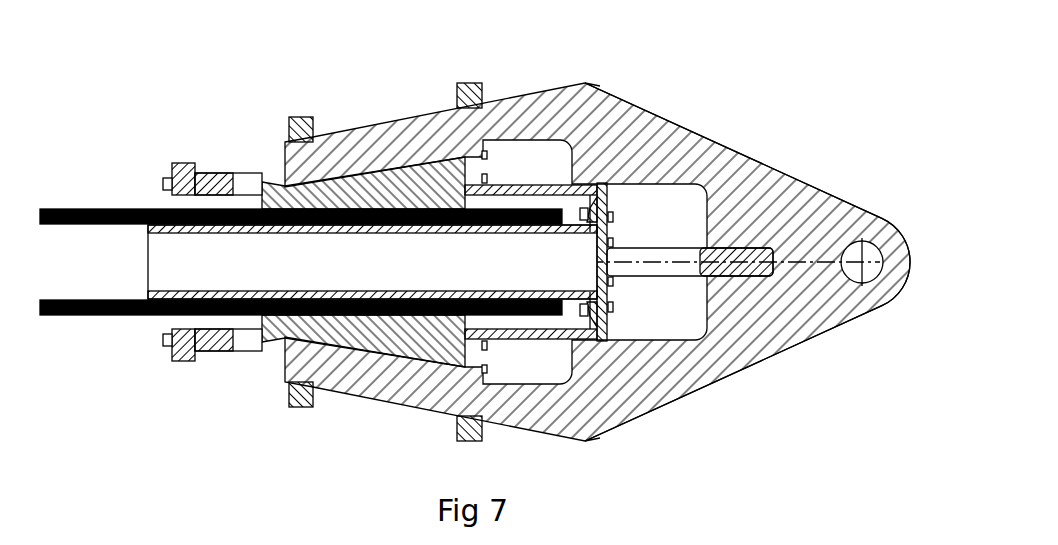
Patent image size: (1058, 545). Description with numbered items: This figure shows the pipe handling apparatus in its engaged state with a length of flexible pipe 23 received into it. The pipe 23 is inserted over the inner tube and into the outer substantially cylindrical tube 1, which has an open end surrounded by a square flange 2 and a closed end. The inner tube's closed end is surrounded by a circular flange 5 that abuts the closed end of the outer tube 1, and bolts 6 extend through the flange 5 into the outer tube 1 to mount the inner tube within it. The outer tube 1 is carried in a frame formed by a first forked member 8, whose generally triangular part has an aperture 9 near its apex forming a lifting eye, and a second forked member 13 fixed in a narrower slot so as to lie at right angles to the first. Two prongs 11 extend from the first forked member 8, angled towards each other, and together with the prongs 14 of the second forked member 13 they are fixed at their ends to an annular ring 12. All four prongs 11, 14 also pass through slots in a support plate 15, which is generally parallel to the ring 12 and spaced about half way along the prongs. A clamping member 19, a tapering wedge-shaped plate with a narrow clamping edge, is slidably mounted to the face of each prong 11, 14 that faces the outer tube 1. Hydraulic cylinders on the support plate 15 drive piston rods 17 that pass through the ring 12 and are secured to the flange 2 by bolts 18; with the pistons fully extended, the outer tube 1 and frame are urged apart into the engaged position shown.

The outer substantially cylindrical tube 1 is at (521, 337).
The square flange 2 is at (172, 165).
The circular flange 5 is at (598, 187).
The bolts 6 is at (610, 208).
The first forked member 8 is at (802, 330).
The aperture 9 is at (862, 265).
The prongs 11 is at (421, 122).
The annular ring 12 is at (297, 407).
The second forked member 13 is at (663, 252).
The prongs of the second forked member 14 is at (571, 298).
The support plate 15 is at (470, 90).
The piston rod 17 is at (213, 345).
The bolts 18 is at (165, 342).
The clamping member 19 is at (352, 188).
The pipe 23 is at (82, 313).